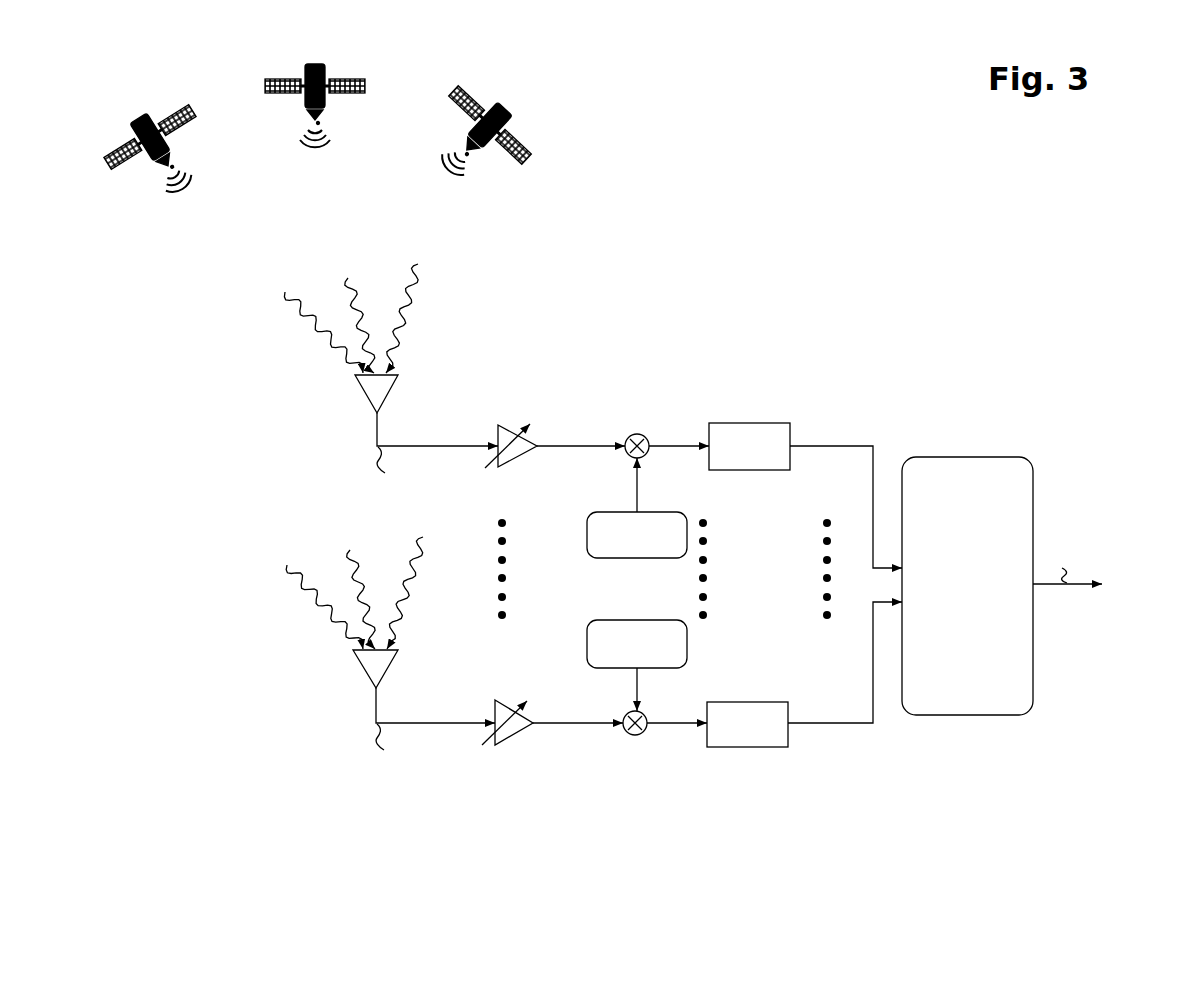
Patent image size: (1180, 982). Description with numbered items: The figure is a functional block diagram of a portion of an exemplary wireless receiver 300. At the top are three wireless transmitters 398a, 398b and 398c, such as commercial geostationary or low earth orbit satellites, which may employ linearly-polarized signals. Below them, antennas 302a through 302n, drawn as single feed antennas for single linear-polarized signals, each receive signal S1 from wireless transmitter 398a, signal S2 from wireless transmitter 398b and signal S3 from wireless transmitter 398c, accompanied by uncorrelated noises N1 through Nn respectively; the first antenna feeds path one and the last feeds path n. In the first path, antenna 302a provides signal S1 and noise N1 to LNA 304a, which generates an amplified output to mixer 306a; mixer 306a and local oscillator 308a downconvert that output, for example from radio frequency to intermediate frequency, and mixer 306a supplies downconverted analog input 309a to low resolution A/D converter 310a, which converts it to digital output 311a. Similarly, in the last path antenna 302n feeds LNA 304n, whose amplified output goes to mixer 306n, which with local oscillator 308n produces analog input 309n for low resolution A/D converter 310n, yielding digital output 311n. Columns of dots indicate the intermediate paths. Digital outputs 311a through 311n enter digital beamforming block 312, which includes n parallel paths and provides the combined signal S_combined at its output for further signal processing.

The wireless receiver 300 is at (981, 224).
The wireless transmitter 398a is at (145, 122).
The wireless transmitter 398b is at (315, 72).
The wireless transmitter 398c is at (515, 97).
The antenna 302a is at (388, 393).
The antenna 302n is at (389, 668).
The LNA 304a is at (517, 425).
The LNA 304n is at (515, 704).
The mixer 306a is at (637, 434).
The mixer 306n is at (635, 736).
The local oscillator 308a is at (637, 508).
The local oscillator 308n is at (637, 665).
The analog input 309a is at (688, 448).
The analog input 309n is at (689, 720).
The low resolution A/D converter 310a is at (752, 423).
The low resolution A/D converter 310n is at (750, 700).
The digital output 311a is at (827, 448).
The digital output 311n is at (831, 722).
The digital beamforming block 312 is at (1013, 586).